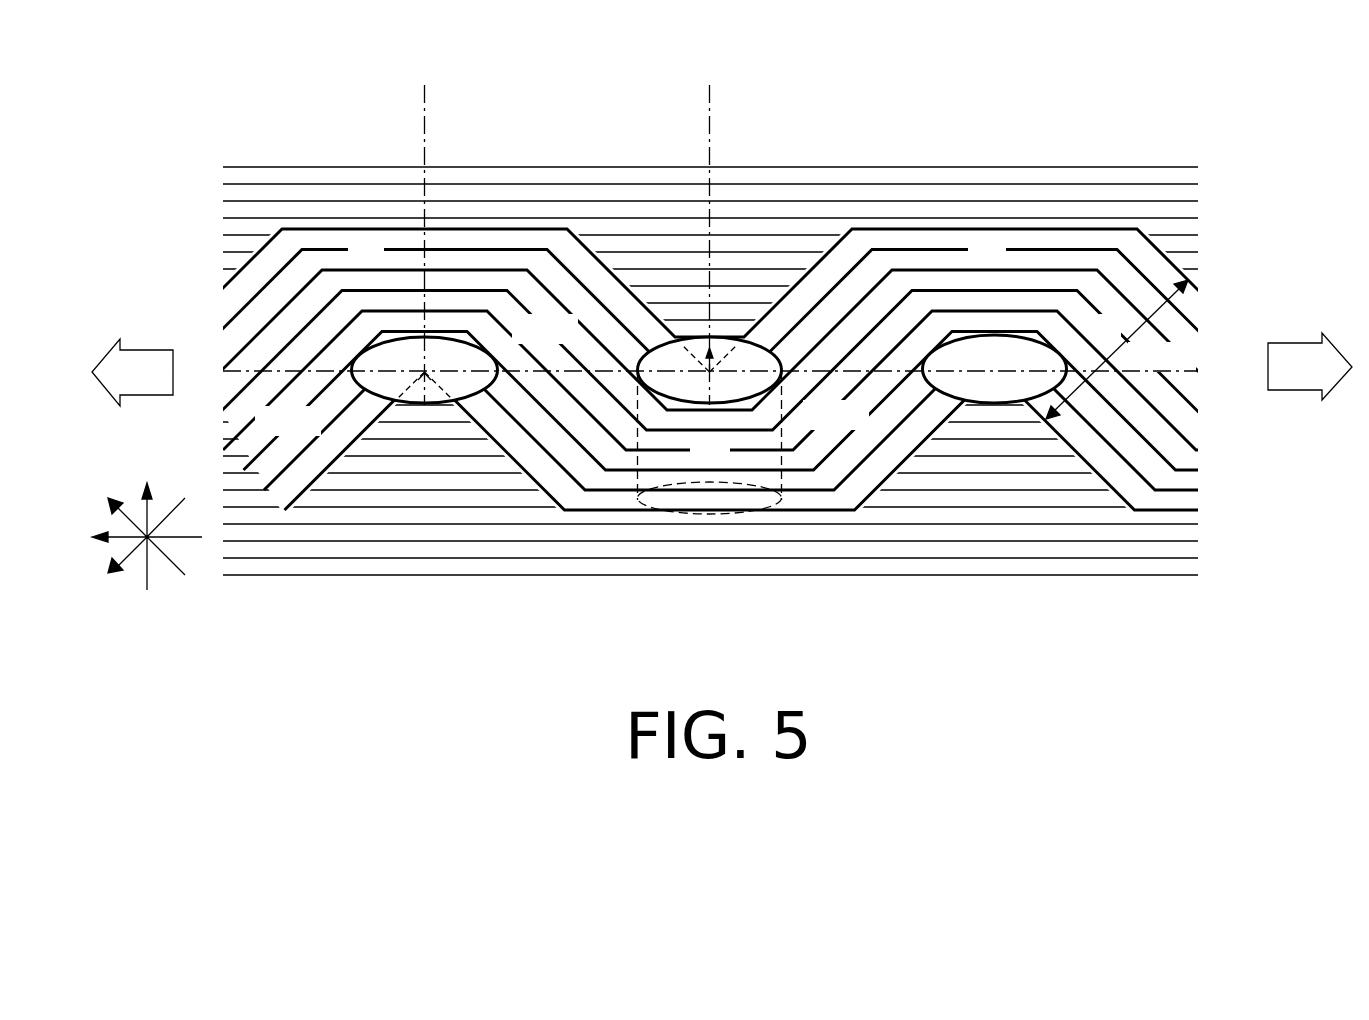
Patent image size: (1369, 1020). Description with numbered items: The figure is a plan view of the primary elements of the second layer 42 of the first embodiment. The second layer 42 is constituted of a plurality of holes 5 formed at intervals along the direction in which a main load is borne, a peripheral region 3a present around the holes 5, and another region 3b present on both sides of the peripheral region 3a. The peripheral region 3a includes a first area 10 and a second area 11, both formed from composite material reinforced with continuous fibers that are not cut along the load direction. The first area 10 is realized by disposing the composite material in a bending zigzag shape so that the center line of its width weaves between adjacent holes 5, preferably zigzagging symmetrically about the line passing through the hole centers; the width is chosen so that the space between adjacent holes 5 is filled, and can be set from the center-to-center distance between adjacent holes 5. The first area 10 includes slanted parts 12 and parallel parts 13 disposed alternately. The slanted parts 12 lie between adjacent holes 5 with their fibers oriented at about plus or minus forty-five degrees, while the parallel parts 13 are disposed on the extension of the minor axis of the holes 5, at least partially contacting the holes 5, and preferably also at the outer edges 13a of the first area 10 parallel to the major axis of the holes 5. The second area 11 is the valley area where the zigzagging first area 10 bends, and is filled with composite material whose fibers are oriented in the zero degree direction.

The second layer 42 is at (262, 130).
The first area 10 is at (272, 298).
The hole 5 is at (720, 343).
The second area 11 is at (814, 230).
The slanted part 12 is at (548, 470).
The parallel part 13 is at (1051, 257).
The outer edge 13a is at (676, 514).
The peripheral region 3a is at (1225, 228).
The other region 3b is at (1225, 160).